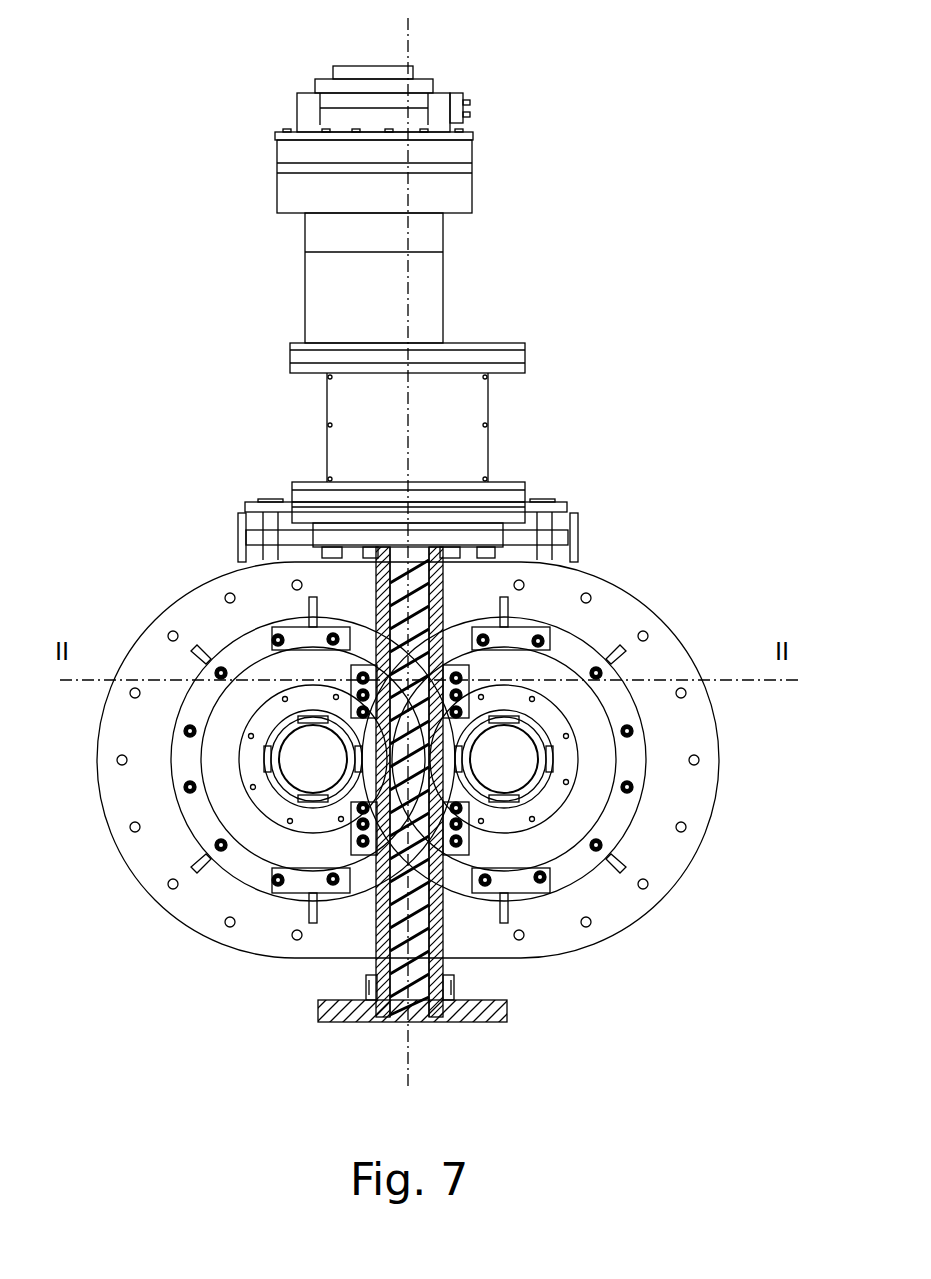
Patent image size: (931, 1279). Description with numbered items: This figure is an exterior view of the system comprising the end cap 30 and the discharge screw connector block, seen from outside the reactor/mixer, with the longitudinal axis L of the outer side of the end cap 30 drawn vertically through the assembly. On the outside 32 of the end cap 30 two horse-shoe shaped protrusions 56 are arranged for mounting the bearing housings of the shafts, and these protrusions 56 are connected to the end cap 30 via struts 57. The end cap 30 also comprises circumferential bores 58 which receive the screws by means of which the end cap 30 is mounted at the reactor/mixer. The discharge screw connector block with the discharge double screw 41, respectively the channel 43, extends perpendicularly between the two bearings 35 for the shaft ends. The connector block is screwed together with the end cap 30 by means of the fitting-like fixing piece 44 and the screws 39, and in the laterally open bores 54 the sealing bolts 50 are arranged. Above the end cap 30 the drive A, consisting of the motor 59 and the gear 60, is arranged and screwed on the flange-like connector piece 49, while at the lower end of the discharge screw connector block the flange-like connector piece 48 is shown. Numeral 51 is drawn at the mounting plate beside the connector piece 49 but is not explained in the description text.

The longitudinal axis L is at (408, 28).
The drive A is at (515, 287).
The end cap 30 is at (203, 576).
The outside of the end cap 32 is at (663, 646).
The bearings 35 is at (533, 762).
The screws 39 is at (368, 856).
The discharge double screw 41 is at (420, 1008).
The channel 43 is at (452, 963).
The fitting-like fixing piece 44 is at (472, 663).
The flange-like connector piece 48 is at (496, 1019).
The flange-like connector piece 49 is at (333, 530).
The sealing bolts 50 is at (363, 842).
The mounting plate 51 is at (570, 527).
The laterally open bores 54 is at (360, 825).
The horse-shoe shaped protrusions 56 is at (637, 782).
The struts 57 is at (628, 862).
The circumferential bores 58 is at (645, 890).
The motor 59 is at (460, 200).
The gear 60 is at (485, 415).